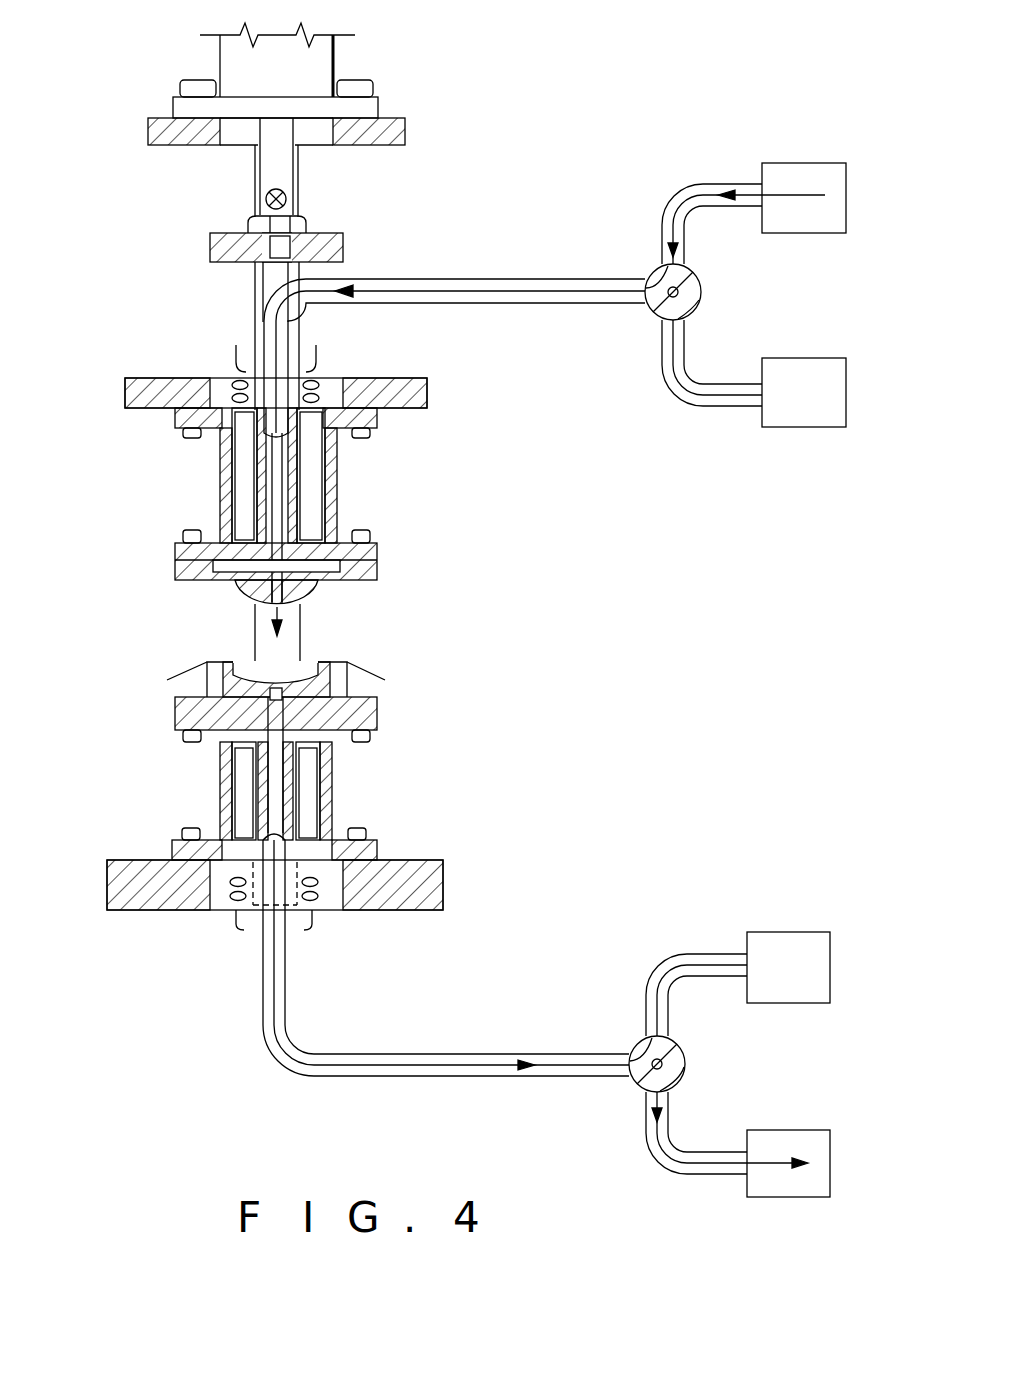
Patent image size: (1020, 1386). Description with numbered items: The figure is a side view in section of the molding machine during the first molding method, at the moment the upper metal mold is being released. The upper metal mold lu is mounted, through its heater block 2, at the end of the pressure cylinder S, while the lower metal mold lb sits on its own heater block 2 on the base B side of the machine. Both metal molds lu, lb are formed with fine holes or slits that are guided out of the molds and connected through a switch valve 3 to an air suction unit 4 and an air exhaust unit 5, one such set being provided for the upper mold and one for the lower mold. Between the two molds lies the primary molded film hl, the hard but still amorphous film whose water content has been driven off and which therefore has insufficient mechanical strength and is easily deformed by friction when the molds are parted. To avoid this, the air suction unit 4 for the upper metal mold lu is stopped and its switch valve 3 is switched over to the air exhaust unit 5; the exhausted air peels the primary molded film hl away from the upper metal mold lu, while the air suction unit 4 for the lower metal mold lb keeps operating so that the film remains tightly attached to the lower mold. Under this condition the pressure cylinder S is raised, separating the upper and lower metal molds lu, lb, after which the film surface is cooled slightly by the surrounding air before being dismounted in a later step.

The pressure cylinder S is at (335, 53).
The heater block 2 is at (338, 485).
The switch valve 3 is at (652, 272).
The air suction unit 4 is at (797, 358).
The air exhaust unit 5 is at (797, 163).
The upper metal mold lu is at (378, 566).
The lower metal mold lb is at (378, 702).
The primary molded film hl is at (184, 673).
The base B is at (445, 884).